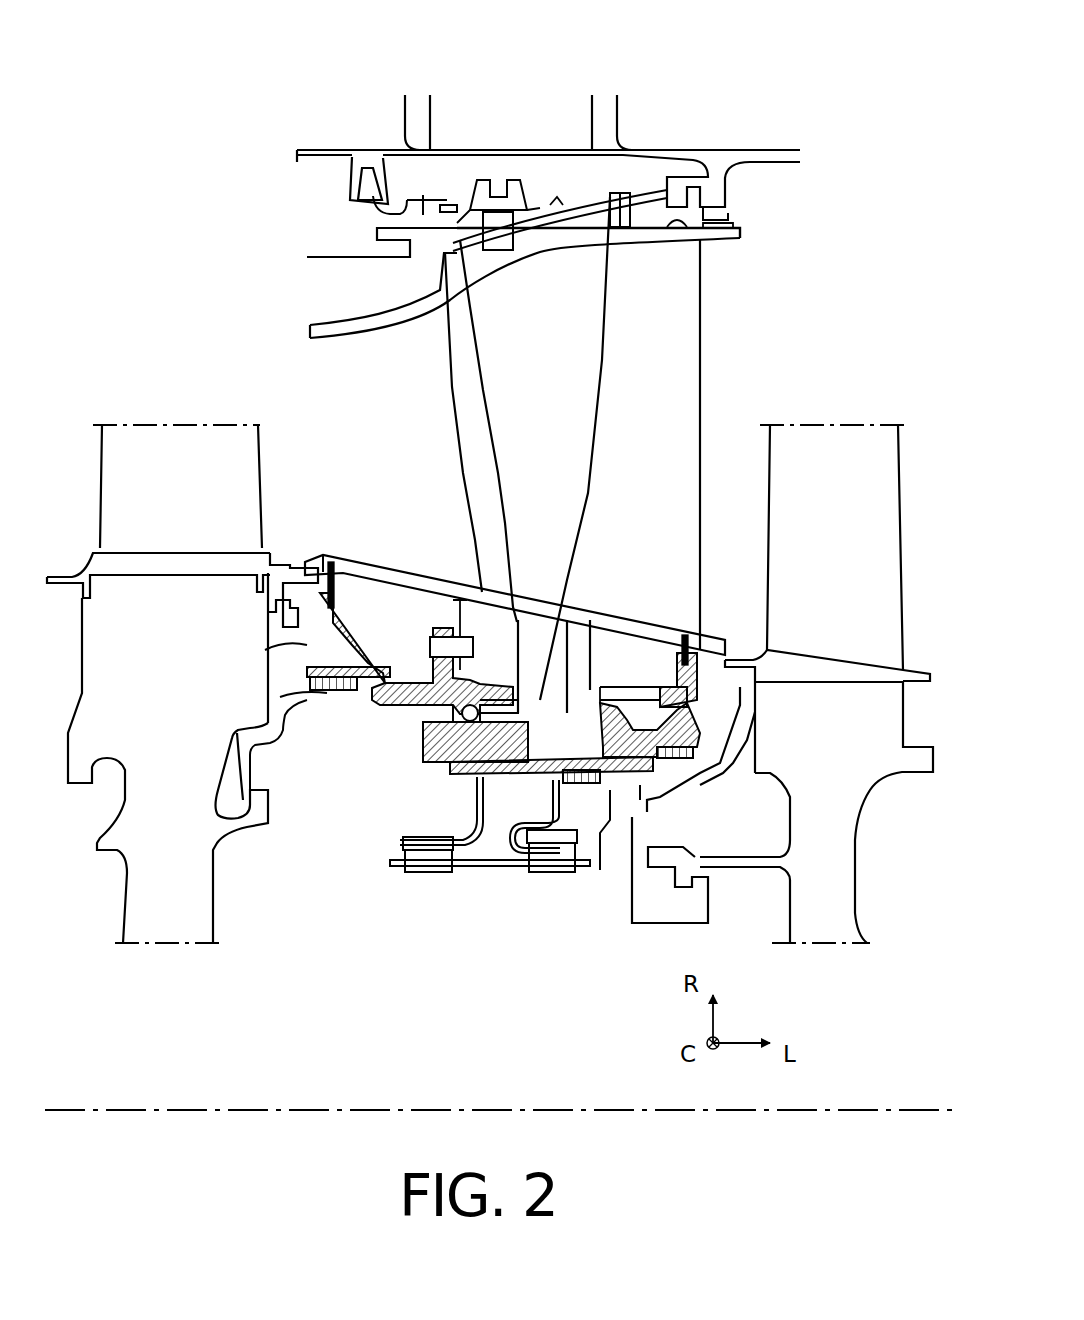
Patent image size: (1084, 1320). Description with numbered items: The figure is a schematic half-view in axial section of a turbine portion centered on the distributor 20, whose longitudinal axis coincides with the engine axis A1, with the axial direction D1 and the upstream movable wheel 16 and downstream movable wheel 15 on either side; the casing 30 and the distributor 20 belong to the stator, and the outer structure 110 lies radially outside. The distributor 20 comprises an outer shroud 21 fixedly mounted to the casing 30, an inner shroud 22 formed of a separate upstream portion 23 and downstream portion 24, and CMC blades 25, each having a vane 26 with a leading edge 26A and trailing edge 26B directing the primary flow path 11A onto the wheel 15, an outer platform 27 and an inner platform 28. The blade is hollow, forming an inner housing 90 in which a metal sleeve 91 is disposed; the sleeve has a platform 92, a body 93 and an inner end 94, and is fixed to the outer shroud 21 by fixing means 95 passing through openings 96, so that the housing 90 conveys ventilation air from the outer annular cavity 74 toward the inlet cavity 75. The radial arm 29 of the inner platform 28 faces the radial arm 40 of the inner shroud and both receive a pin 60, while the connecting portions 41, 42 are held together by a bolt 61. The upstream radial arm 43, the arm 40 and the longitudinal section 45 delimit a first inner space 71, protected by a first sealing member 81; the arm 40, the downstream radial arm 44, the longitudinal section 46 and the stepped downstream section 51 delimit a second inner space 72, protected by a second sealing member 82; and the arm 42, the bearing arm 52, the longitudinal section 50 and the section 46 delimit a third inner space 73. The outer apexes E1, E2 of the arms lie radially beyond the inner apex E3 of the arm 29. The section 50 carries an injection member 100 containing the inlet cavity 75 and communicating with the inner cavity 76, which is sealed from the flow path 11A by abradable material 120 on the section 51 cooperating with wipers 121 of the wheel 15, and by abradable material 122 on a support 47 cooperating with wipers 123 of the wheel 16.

The outer casing 110 is at (430, 100).
The casing 30 is at (722, 152).
The distributor 20 is at (283, 283).
The outer shroud 21 is at (652, 205).
The outer annular cavity 74 is at (403, 186).
The fixing means 95 is at (500, 182).
The openings 96 is at (552, 202).
The axial direction D1 is at (840, 360).
The blade 25 is at (522, 448).
The vane 26 is at (448, 393).
The radially outer platform 27 is at (413, 320).
The radially inner platform 28 is at (378, 553).
The leading edge 26A is at (470, 545).
The trailing edge 26B is at (706, 436).
The primary flow path 11A is at (220, 385).
The sleeve 91 is at (679, 425).
The radially outer end 92 is at (567, 200).
The body 93 is at (552, 345).
The end 94 is at (577, 650).
The inner housing 90 is at (590, 418).
The radially outer apex E1 is at (326, 568).
The radially outer apex E2 is at (692, 634).
The radially inner apex E3 is at (465, 665).
The first sealing member 81 is at (333, 560).
The second sealing member 82 is at (690, 633).
The radial arm 40 is at (430, 595).
The longitudinal section 45 is at (387, 686).
The first inner space 71 is at (383, 605).
The connecting portion 42 is at (497, 687).
The radial arm 29 is at (488, 580).
The connecting means 60 is at (478, 615).
The longitudinal section 50 is at (527, 755).
The connecting means 61 is at (423, 757).
The third inner space 73 is at (575, 738).
The wipers 121 is at (597, 793).
The abradable material 120 is at (690, 750).
The longitudinal section 46 is at (610, 690).
The second inner space 72 is at (634, 675).
The bearing arm 52 is at (697, 713).
The downstream section 51 is at (653, 753).
The connecting portion 41 is at (468, 778).
The inlet cavity 75 is at (492, 793).
The injection member 100 is at (513, 866).
The inner cavity 76 is at (563, 967).
The upstream radial arm 43 is at (307, 613).
The support 47 is at (317, 662).
The abradable material 122 is at (307, 683).
The wipers 123 is at (313, 697).
The movable wheel 16 is at (140, 962).
The movable wheel 15 is at (803, 962).
The downstream radial arm 44 is at (760, 660).
The inner shroud 22 is at (414, 843).
The upstream portion 23 is at (366, 712).
The downstream portion 24 is at (490, 790).
The axis A1 is at (86, 1113).